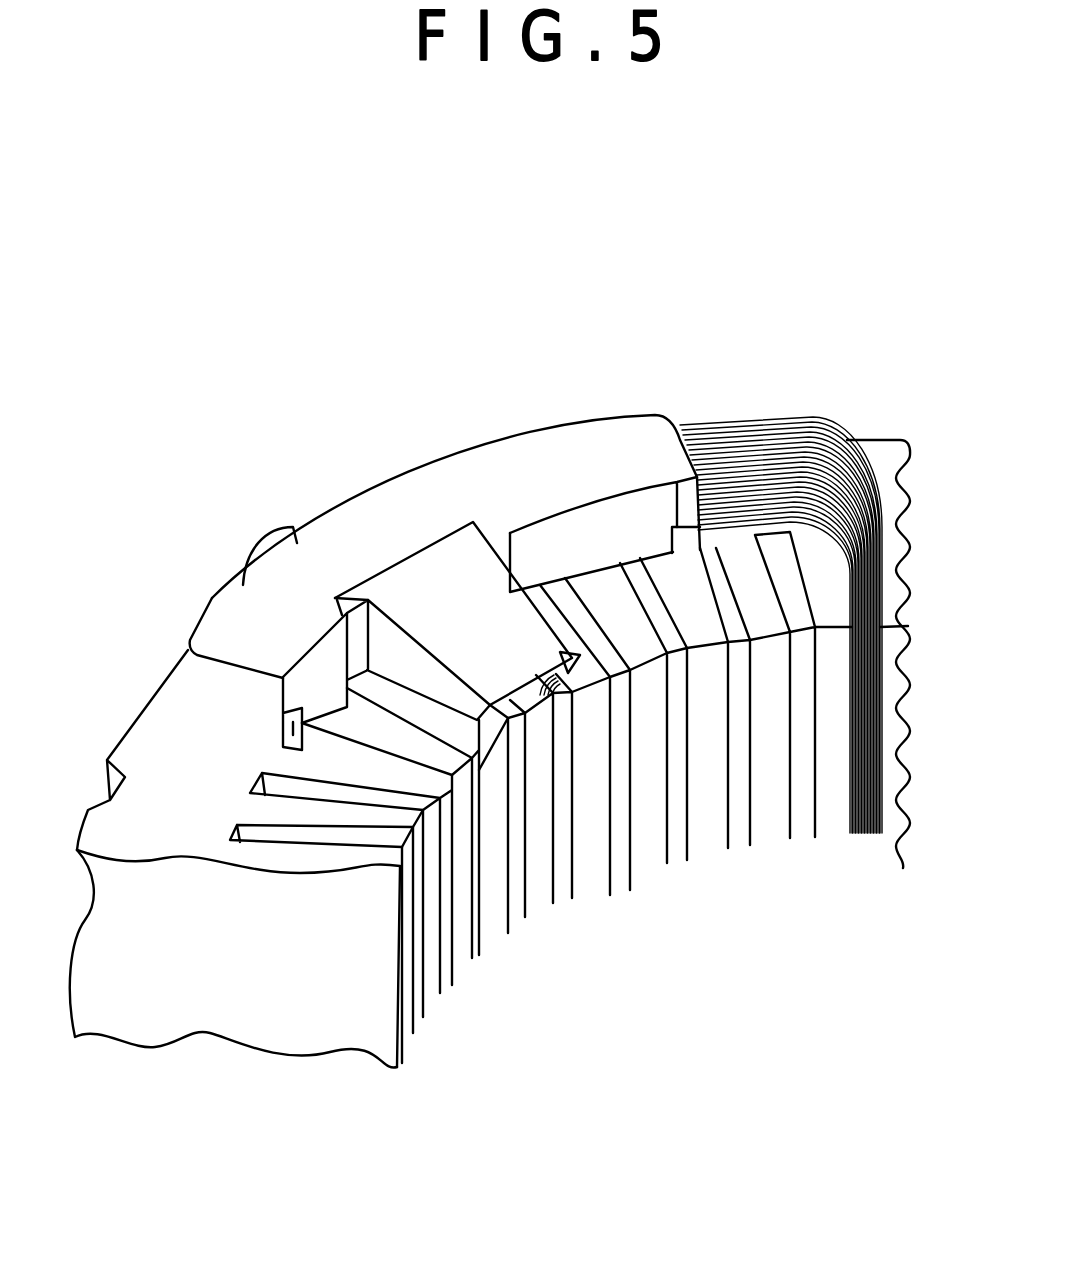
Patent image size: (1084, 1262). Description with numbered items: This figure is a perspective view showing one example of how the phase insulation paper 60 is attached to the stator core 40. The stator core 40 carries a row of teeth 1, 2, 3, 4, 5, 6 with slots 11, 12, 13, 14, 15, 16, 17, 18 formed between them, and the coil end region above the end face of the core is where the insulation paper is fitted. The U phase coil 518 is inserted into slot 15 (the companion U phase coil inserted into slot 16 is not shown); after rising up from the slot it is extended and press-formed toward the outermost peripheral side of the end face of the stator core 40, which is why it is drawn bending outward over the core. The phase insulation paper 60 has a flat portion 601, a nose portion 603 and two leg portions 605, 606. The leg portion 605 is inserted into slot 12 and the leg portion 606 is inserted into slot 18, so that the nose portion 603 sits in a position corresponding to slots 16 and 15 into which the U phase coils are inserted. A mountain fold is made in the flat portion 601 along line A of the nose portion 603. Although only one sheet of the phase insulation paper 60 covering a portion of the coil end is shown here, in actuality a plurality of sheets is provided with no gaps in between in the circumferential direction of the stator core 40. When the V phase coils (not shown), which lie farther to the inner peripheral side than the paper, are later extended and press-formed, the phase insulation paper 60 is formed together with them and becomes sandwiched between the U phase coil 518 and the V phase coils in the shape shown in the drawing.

The tooth 1 is at (768, 788).
The tooth 2 is at (705, 803).
The tooth 3 is at (643, 822).
The tooth 4 is at (590, 855).
The tooth 5 is at (538, 883).
The tooth 6 is at (497, 907).
The slot 11 is at (800, 785).
The slot 12 is at (737, 793).
The slot 13 is at (673, 813).
The slot 14 is at (613, 840).
The slot 15 is at (557, 870).
The slot 16 is at (515, 890).
The slot 17 is at (478, 970).
The slot 18 is at (442, 1003).
The stator core 40 is at (880, 467).
The phase insulation paper 60 is at (521, 482).
The U phase coil 518 is at (770, 415).
The flat portion 601 is at (567, 455).
The nose portion 603 is at (432, 582).
The leg portion 605 is at (681, 540).
The leg portion 606 is at (297, 713).
The line A is at (444, 616).